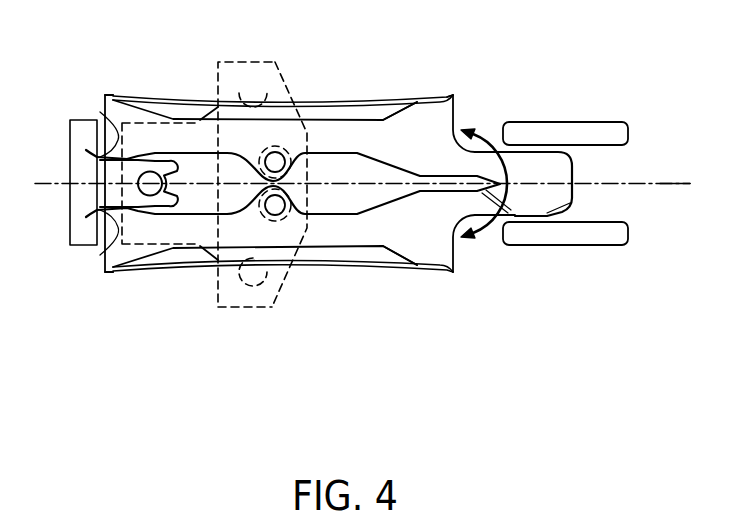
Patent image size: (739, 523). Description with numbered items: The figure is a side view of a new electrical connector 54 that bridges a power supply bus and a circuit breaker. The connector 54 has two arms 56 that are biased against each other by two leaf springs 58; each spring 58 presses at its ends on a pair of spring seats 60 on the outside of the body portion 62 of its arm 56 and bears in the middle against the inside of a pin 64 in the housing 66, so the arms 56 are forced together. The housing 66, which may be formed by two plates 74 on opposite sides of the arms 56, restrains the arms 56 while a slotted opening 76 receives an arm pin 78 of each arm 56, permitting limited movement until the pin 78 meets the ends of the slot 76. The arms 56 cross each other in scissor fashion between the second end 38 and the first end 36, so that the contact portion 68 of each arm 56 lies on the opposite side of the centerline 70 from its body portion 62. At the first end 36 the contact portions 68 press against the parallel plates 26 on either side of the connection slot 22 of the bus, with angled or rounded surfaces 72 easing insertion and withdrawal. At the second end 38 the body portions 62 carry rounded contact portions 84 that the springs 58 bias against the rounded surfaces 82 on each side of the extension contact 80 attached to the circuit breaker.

The connection slot 22 is at (606, 170).
The parallel plates 26 is at (613, 122).
The first end 36 is at (582, 208).
The second end 38 is at (92, 298).
The connector 54 is at (153, 64).
The arms 56 is at (413, 102).
The leaf springs 58 is at (200, 98).
The spring seats 60 is at (110, 274).
The body portion 62 is at (354, 130).
The pin 64 is at (255, 86).
The housing 66 is at (222, 308).
The contact portion 68 is at (528, 123).
The centerline 70 is at (676, 184).
The angled or rounded surfaces 72 is at (508, 147).
The plates 74 is at (280, 64).
The slotted opening 76 is at (262, 198).
The arm pin 78 is at (298, 195).
The extension contact 80 is at (97, 172).
The rounded surface 82 is at (98, 156).
The rounded contact portion 84 is at (100, 112).